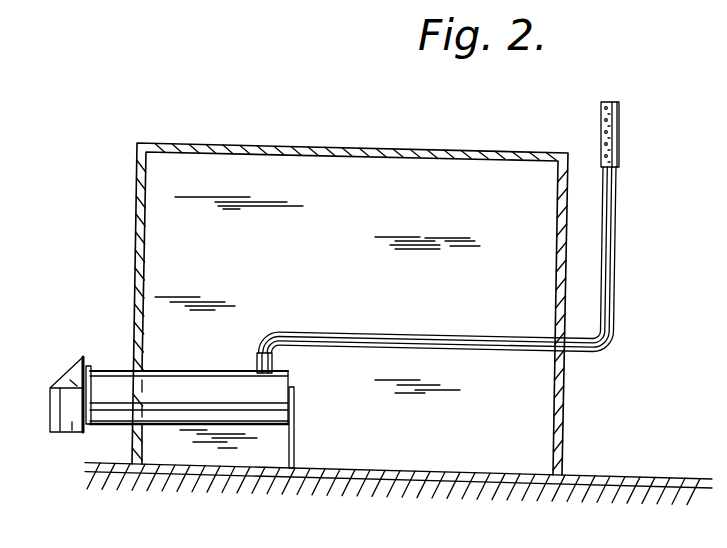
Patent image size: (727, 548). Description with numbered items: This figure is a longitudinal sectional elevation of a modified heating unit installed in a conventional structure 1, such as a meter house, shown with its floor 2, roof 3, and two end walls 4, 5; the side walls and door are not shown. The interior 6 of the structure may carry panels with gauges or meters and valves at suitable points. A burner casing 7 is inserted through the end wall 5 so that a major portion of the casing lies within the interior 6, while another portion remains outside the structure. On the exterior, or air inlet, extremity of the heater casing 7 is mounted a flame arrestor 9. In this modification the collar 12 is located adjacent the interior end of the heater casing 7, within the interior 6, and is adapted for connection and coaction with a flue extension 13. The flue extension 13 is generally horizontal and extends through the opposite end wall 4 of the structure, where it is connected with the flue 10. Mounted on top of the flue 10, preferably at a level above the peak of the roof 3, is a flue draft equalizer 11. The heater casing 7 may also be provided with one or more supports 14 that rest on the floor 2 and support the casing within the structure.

The structure 1 is at (452, 150).
The floor 2 is at (399, 481).
The roof 3 is at (318, 150).
The end wall 4 is at (566, 384).
The end wall 5 is at (137, 265).
The interior of the structure 6 is at (244, 167).
The burner casing 7 is at (183, 380).
The flame arrestor 9 is at (58, 383).
The flue 10 is at (612, 262).
The flue draft equalizer 11 is at (617, 122).
The collar 12 is at (277, 365).
The flue extension 13 is at (491, 352).
The support 14 is at (298, 450).